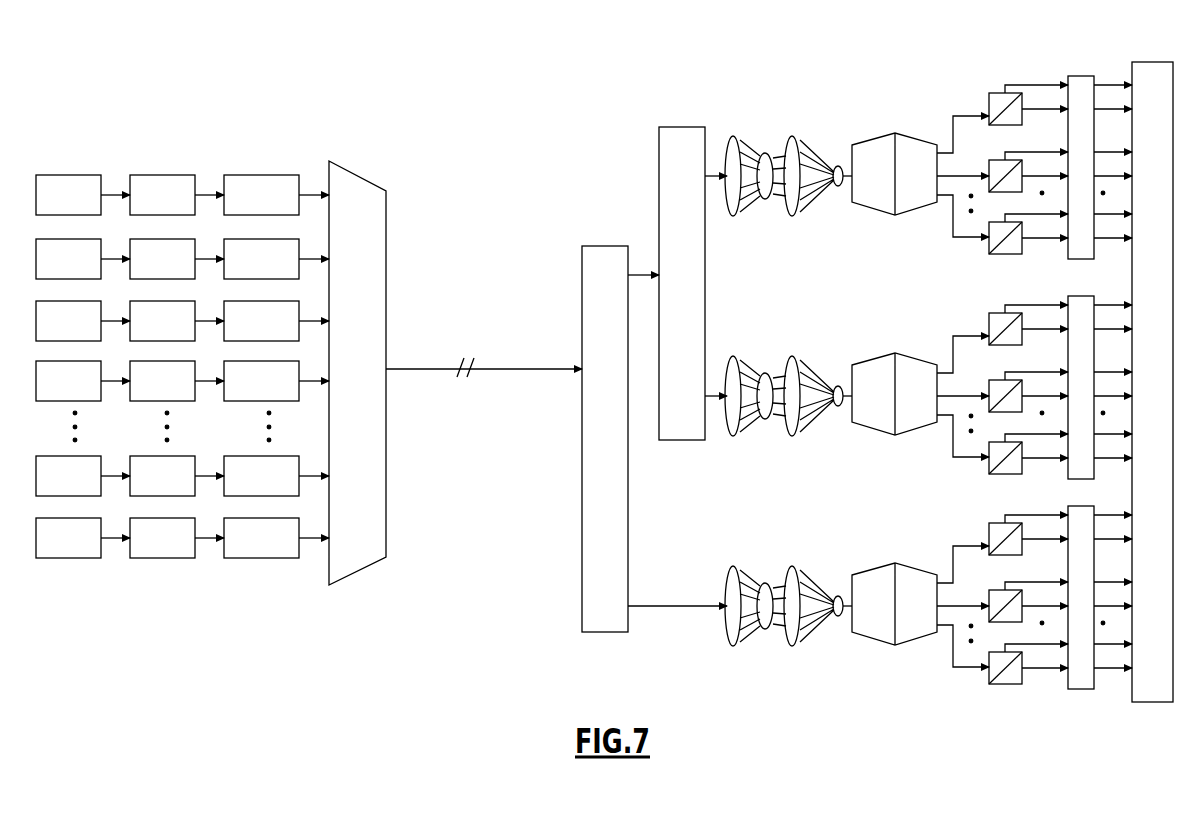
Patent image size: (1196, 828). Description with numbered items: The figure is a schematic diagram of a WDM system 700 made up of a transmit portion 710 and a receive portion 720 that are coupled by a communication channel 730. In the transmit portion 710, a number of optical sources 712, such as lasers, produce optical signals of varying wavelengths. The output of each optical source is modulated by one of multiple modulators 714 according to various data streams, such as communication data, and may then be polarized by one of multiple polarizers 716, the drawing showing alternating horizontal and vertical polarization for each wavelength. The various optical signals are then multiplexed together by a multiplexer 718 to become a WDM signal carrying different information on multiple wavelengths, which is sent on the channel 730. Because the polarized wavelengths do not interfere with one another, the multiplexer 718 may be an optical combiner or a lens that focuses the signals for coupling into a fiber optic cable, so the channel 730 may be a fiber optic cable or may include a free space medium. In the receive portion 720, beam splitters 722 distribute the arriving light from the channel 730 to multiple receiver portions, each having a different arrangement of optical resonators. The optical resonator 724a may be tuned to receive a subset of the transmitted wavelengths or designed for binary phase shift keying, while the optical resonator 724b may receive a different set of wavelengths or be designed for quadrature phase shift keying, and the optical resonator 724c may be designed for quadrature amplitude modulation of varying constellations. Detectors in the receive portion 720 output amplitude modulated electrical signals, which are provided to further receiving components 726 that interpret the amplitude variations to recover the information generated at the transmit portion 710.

The WDM system 700 is at (176, 57).
The transmit portion 710 is at (393, 157).
The optical sources 712 is at (30, 576).
The modulators 714 is at (125, 576).
The polarizers 716 is at (220, 576).
The multiplexer 718 is at (379, 563).
The receive portion 720 is at (564, 44).
The beam splitters 722 is at (675, 447).
The optical resonator 724a is at (831, 155).
The optical resonator 724b is at (831, 375).
The optical resonator 724c is at (831, 585).
The further receiving component 726 is at (1157, 703).
The communication channel 730 is at (437, 356).